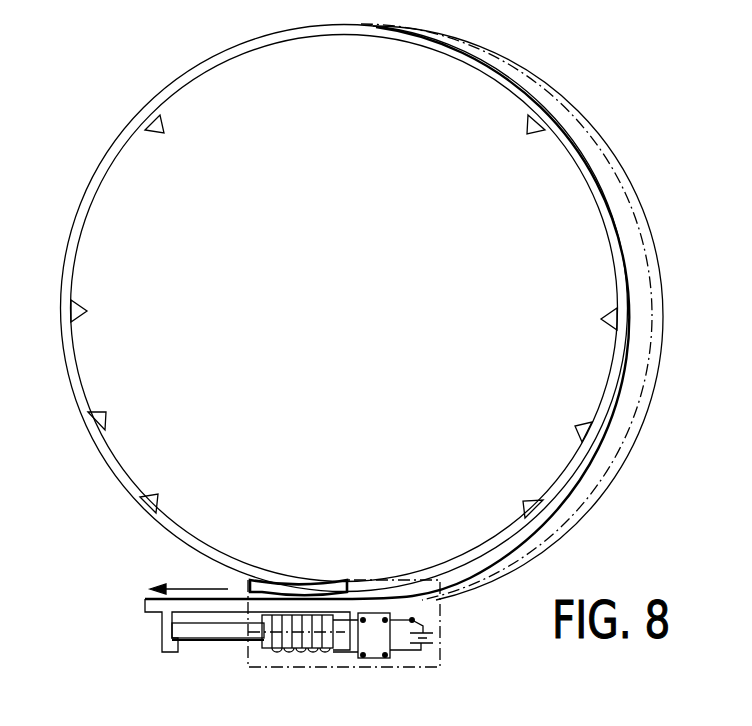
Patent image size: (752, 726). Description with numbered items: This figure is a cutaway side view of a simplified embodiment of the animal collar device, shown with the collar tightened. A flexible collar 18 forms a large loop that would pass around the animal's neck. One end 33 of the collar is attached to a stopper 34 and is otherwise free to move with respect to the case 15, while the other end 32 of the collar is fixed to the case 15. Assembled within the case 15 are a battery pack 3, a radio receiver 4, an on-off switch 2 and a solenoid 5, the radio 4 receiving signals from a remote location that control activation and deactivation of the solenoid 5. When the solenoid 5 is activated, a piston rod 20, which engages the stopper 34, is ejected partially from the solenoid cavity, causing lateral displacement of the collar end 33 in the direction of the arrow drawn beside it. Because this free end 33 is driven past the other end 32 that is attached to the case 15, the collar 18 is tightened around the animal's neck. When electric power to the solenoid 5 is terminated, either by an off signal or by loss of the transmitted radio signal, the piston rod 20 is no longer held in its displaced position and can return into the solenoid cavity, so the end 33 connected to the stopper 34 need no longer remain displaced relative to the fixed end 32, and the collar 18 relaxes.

The flexible collar 18 is at (88, 200).
The other end of the collar 32 is at (291, 580).
The case 15 is at (379, 578).
The end of the collar 33 is at (196, 598).
The stopper 34 is at (160, 631).
The piston rod 20 is at (198, 640).
The solenoid 5 is at (262, 650).
The radio receiver 4 is at (392, 658).
The on-off switch 2 is at (396, 620).
The battery pack 3 is at (434, 634).